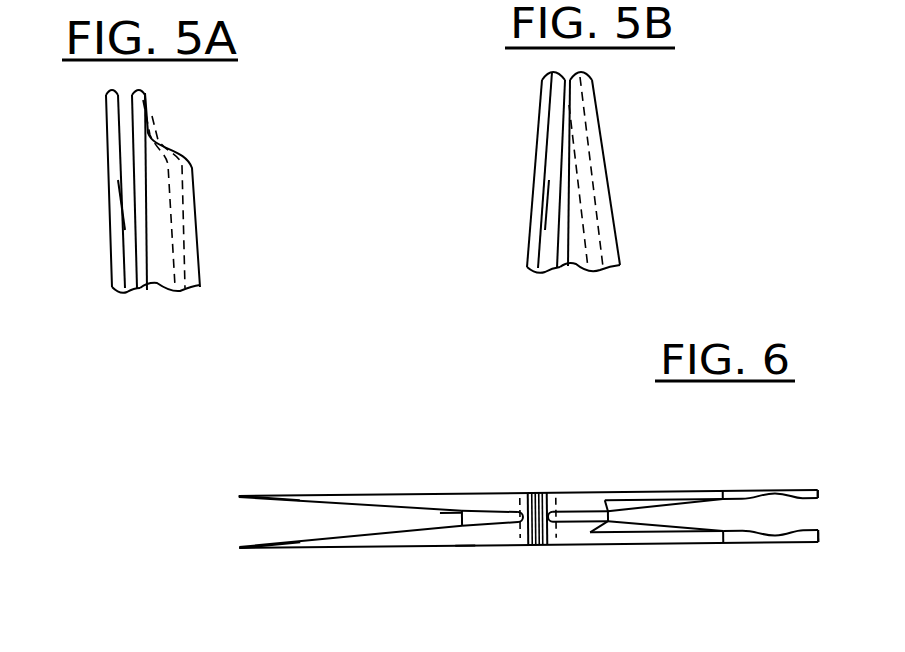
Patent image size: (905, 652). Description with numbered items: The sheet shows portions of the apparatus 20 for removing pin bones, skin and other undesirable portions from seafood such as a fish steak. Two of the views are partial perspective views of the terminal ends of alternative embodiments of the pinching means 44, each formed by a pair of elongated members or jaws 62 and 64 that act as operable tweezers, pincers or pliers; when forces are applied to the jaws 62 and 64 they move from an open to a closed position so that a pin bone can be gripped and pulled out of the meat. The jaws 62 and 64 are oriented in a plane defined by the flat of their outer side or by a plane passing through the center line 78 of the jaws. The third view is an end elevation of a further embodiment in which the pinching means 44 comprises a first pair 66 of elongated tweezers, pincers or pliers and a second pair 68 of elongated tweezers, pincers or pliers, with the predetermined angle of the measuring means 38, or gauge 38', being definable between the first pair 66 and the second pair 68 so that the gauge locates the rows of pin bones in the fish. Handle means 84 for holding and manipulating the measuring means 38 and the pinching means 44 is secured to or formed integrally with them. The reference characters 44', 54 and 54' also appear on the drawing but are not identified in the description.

In FIG. 5A, the apparatus 20 is at (103, 298).
In FIG. 5B, the apparatus 20 is at (515, 271).
In FIG. 6, the measuring means 38 is at (540, 553).
In FIG. 6, the gauge 38' is at (442, 584).
In FIG. 5A, the pinching means 44 is at (89, 207).
In FIG. 5B, the pinching means 44 is at (519, 209).
In FIG. 6, the pinching means 44 is at (540, 519).
In FIG. 6, the blade strip 44' is at (665, 516).
In FIG. 6, the spacer wedge 54 is at (527, 504).
In FIG. 6, the spacer wedge 54' is at (635, 572).
In FIG. 5A, the jaw 62 is at (150, 125).
In FIG. 5B, the jaw 62 is at (600, 125).
In FIG. 6, the jaw 62 is at (306, 497).
In FIG. 5A, the jaw 64 is at (108, 123).
In FIG. 5B, the jaw 64 is at (544, 113).
In FIG. 6, the jaw 64 is at (312, 548).
In FIG. 6, the first pair of elongated tweezers 66 is at (265, 497).
In FIG. 6, the second pair of elongated tweezers 68 is at (812, 492).
In FIG. 5A, the center line 78 is at (180, 238).
In FIG. 5B, the center line 78 is at (600, 190).
In FIG. 6, the handle means 84 is at (496, 517).